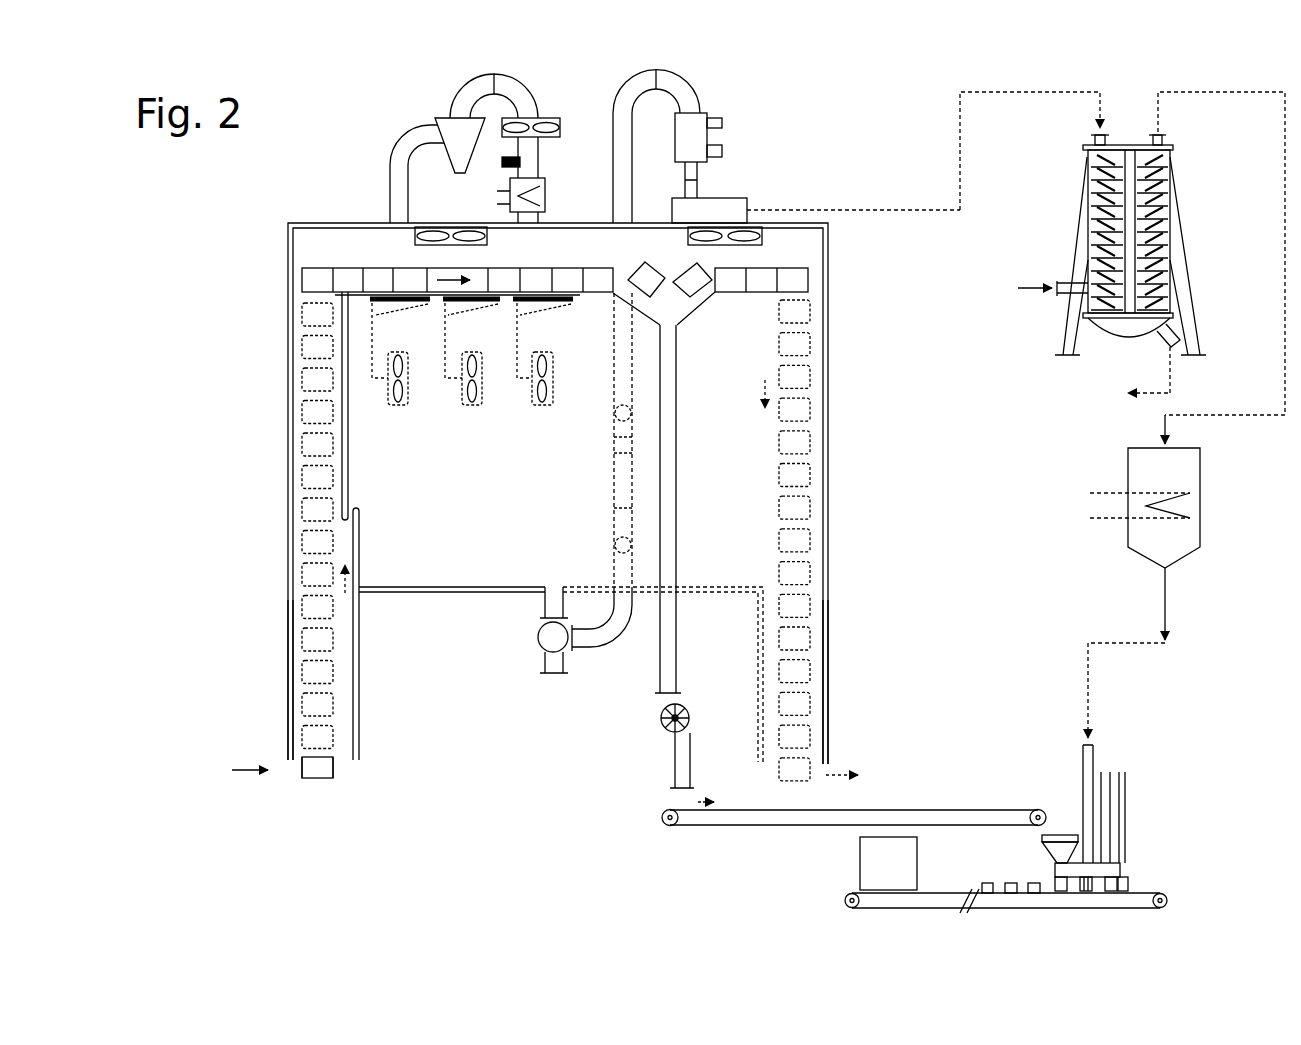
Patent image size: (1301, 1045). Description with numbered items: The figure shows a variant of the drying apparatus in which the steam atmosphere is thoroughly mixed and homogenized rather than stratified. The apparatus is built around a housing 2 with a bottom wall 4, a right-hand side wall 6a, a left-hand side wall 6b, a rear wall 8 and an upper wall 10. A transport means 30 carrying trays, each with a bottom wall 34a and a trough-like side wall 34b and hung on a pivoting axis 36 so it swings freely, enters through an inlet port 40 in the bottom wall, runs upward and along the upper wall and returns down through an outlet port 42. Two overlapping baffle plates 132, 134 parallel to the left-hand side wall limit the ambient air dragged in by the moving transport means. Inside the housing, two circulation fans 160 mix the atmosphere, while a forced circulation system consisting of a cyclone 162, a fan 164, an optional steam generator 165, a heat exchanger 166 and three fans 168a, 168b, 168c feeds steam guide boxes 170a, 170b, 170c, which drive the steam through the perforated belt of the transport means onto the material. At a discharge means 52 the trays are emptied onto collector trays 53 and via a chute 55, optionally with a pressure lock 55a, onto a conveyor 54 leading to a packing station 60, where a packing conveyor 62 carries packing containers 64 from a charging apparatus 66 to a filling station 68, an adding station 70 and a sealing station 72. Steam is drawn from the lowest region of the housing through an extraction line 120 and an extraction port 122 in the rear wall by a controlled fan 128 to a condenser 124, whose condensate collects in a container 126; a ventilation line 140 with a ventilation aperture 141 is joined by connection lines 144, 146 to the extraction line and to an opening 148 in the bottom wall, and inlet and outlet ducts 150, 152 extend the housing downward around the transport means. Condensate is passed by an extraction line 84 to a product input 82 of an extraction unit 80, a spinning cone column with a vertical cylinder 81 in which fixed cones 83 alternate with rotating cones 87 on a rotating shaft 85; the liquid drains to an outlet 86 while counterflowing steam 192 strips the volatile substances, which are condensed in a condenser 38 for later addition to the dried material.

The housing 2 is at (838, 289).
The bottom wall 4 is at (445, 598).
The right-hand side wall 6a is at (831, 371).
The left-hand side wall 6b is at (288, 370).
The rear wall 8 is at (555, 430).
The upper wall 10 is at (327, 223).
The transport means 30 is at (313, 792).
The bottom wall 34a is at (322, 778).
The side wall 34b is at (302, 778).
The pivoting axis 36 is at (322, 767).
The condenser 38 is at (1200, 497).
The inlet port 40 is at (344, 765).
The outlet port 42 is at (768, 758).
The discharge means 52 is at (658, 215).
The collector tray 53 is at (697, 308).
The conveyor 54 is at (710, 835).
The chute 55 is at (676, 345).
The lock 55a is at (684, 707).
The packing station 60 is at (1151, 784).
The packing conveyor 62 is at (832, 903).
The packing container 64 is at (985, 876).
The charging apparatus 66 is at (888, 863).
The filling station 68 is at (1045, 842).
The adding station 70 is at (1100, 739).
The sealing station 72 is at (1135, 829).
The extraction unit 80 is at (1206, 216).
The cylinder 81 is at (1170, 273).
The product input 82 is at (1094, 136).
The fixed cone 83 is at (1103, 158).
The extraction line 84 is at (1008, 92).
The rotating shaft 85 is at (1127, 207).
The outlet 86 is at (1162, 337).
The rotating cone 87 is at (1152, 178).
The extraction line 120 is at (615, 493).
The extraction port 122 is at (618, 537).
The condenser 124 is at (707, 113).
The container 126 is at (733, 184).
The fan 128 is at (640, 422).
The baffle plate 132 is at (359, 522).
The baffle plate 134 is at (348, 423).
The ventilation line 140 is at (545, 660).
The ventilation aperture 141 is at (557, 683).
The connection line 144 is at (617, 643).
The connection line 146 is at (545, 602).
The opening 148 is at (552, 582).
The inlet duct 150 is at (288, 683).
The outlet duct 152 is at (833, 698).
The circulation fan 160 is at (487, 240).
The cyclone 162 is at (444, 135).
The fan 164 is at (548, 118).
The steam generator 165 is at (502, 167).
The heat exchanger 166 is at (547, 197).
The fan 168a is at (400, 405).
The fan 168b is at (474, 405).
The fan 168c is at (545, 405).
The steam guide box 170a is at (372, 312).
The steam guide box 170b is at (445, 312).
The steam guide box 170c is at (517, 312).
The steam 192 is at (1039, 304).